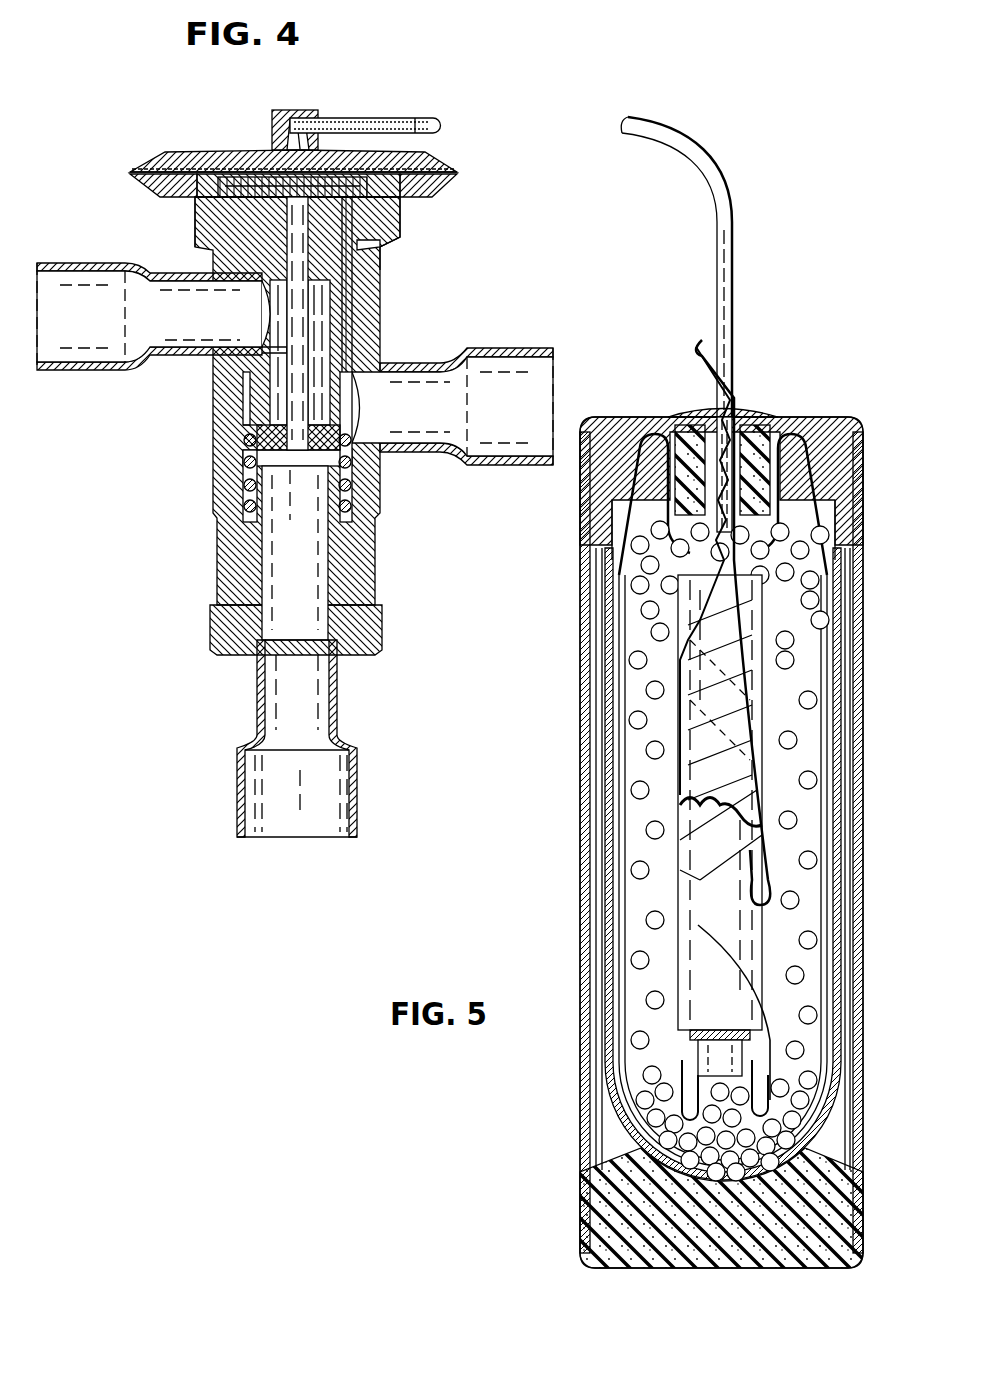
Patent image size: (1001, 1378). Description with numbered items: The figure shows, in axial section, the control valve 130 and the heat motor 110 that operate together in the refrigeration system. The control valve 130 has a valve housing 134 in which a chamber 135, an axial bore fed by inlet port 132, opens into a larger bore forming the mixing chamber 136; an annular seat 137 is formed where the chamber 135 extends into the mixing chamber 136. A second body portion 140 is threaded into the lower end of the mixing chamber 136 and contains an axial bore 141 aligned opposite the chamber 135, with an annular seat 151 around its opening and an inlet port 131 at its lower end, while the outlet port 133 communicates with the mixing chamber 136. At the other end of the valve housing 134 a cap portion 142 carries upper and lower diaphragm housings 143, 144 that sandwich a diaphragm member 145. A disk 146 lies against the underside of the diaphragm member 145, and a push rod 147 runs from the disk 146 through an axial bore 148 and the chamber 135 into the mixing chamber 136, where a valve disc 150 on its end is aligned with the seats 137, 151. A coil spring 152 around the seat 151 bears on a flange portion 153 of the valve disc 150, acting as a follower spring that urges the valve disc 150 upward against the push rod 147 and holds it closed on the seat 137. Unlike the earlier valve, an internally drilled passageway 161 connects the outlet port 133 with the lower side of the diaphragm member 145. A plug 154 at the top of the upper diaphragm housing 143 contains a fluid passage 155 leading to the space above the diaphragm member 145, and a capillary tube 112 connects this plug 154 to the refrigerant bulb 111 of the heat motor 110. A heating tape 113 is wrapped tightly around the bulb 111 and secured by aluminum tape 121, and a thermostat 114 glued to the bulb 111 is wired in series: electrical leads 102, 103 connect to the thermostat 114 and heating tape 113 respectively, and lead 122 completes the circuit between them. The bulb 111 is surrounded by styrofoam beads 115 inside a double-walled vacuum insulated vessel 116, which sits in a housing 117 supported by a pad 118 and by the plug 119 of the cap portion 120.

In FIG. 5, the electrical lead 102 is at (706, 372).
In FIG. 5, the electrical lead 103 is at (705, 350).
In FIG. 5, the heat motor 110 is at (676, 783).
In FIG. 5, the refrigerant bulb 111 is at (699, 945).
In FIG. 4, the capillary tube 112 is at (398, 118).
In FIG. 5, the capillary tube 112 is at (735, 237).
In FIG. 5, the heating tape 113 is at (697, 857).
In FIG. 5, the thermostat 114 is at (716, 1046).
In FIG. 5, the styrofoam beads 115 is at (660, 556).
In FIG. 5, the double-walled vacuum insulated vessel 116 is at (602, 952).
In FIG. 5, the housing 117 is at (607, 768).
In FIG. 5, the pad 118 is at (625, 1228).
In FIG. 5, the plug 119 is at (690, 478).
In FIG. 5, the cap portion 120 is at (825, 420).
In FIG. 5, the aluminum tape 121 is at (752, 758).
In FIG. 5, the lead 122 is at (769, 1012).
In FIG. 4, the control valve 130 is at (295, 510).
In FIG. 4, the inlet port 131 is at (237, 794).
In FIG. 4, the inlet port 132 is at (92, 366).
In FIG. 4, the outlet port 133 is at (494, 466).
In FIG. 4, the valve housing 134 is at (205, 466).
In FIG. 4, the chamber 135 is at (275, 353).
In FIG. 4, the mixing chamber 136 is at (246, 402).
In FIG. 4, the annular seat 137 is at (246, 422).
In FIG. 4, the second body portion 140 is at (212, 652).
In FIG. 4, the axial bore 141 is at (316, 593).
In FIG. 4, the cap portion 142 is at (190, 237).
In FIG. 4, the upper diaphragm housing 143 is at (172, 153).
In FIG. 4, the lower diaphragm housing 144 is at (165, 193).
In FIG. 4, the diaphragm member 145 is at (222, 177).
In FIG. 4, the disk 146 is at (360, 183).
In FIG. 4, the push rod 147 is at (290, 313).
In FIG. 4, the axial bore 148 is at (266, 290).
In FIG. 4, the valve disc 150 is at (300, 452).
In FIG. 4, the annular seat 151 is at (350, 464).
In FIG. 4, the coil spring 152 is at (246, 490).
In FIG. 4, the flange portion 153 is at (356, 437).
In FIG. 4, the plug 154 is at (293, 110).
In FIG. 4, the fluid passage 155 is at (291, 142).
In FIG. 4, the passageway 161 is at (352, 311).